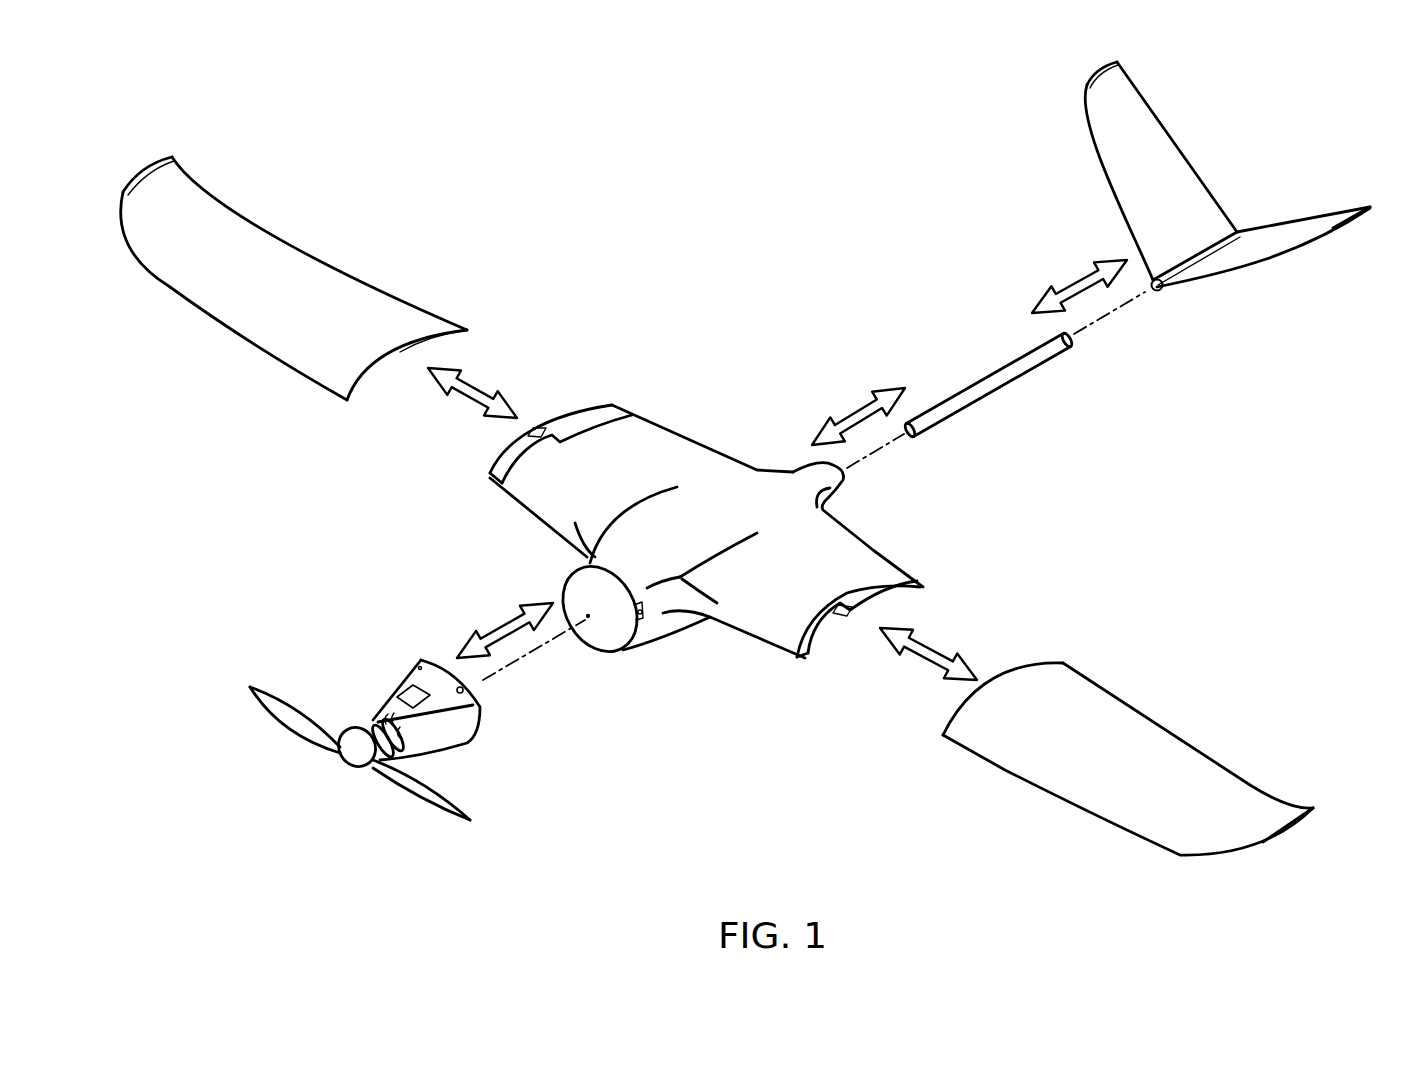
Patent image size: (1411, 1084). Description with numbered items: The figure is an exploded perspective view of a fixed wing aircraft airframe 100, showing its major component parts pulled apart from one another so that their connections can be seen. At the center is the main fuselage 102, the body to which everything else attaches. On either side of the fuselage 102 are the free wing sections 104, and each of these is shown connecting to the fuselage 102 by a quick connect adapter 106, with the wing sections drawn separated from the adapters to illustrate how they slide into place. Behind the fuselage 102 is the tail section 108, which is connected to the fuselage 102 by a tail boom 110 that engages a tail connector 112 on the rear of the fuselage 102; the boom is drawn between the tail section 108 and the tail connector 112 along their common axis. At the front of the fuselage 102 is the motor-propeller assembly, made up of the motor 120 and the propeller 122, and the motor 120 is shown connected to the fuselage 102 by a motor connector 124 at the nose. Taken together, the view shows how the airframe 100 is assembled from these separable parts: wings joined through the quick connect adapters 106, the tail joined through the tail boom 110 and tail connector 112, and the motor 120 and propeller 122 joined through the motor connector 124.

The aircraft airframe 100 is at (197, 553).
The main fuselage 102 is at (657, 437).
The free wing sections 104 is at (158, 203).
The quick connect adapter 106 is at (597, 407).
The tail section 108 is at (1103, 103).
The tail boom 110 is at (1002, 368).
The tail connector 112 is at (833, 487).
The motor 120 is at (467, 745).
The propeller 122 is at (453, 815).
The motor connector 124 is at (607, 640).